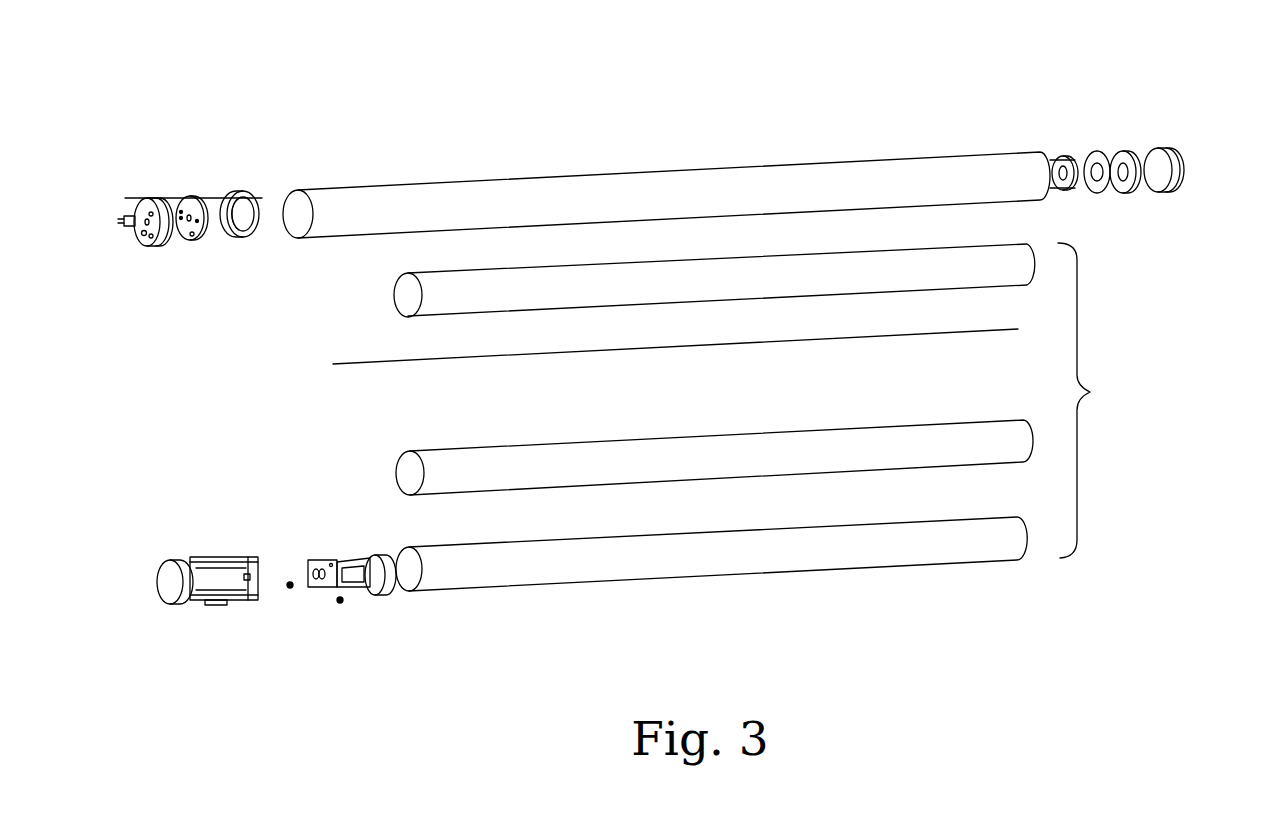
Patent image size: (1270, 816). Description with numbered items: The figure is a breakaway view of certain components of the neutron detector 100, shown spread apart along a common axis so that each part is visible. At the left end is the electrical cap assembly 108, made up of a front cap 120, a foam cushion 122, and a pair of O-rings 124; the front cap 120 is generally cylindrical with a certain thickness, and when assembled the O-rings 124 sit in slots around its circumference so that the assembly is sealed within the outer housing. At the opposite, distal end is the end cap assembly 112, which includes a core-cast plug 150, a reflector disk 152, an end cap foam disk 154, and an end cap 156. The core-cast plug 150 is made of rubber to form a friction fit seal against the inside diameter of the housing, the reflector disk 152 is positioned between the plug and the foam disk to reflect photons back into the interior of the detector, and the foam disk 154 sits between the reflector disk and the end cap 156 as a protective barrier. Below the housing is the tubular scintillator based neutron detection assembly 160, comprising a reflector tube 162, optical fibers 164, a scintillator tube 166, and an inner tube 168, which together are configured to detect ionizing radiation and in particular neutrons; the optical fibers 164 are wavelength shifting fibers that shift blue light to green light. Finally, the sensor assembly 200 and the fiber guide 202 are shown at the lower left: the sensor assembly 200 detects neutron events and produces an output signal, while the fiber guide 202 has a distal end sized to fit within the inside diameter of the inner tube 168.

The neutron detector 100 is at (628, 104).
The electrical cap assembly 108 is at (218, 162).
The end cap assembly 112 is at (1127, 86).
The front cap 120 is at (152, 200).
The foam cushion 122 is at (188, 245).
The O-rings 124 is at (727, 158).
The core-cast plug 150 is at (1060, 155).
The reflector disk 152 is at (1098, 150).
The end cap foam disk 154 is at (1133, 192).
The end cap 156 is at (1186, 160).
The tubular scintillator based neutron detection assembly 160 is at (1092, 392).
The reflector tube 162 is at (960, 432).
The optical fibers 164 is at (708, 347).
The scintillator tube 166 is at (912, 275).
The inner tube 168 is at (936, 552).
The sensor assembly 200 is at (214, 532).
The fiber guide 202 is at (337, 548).